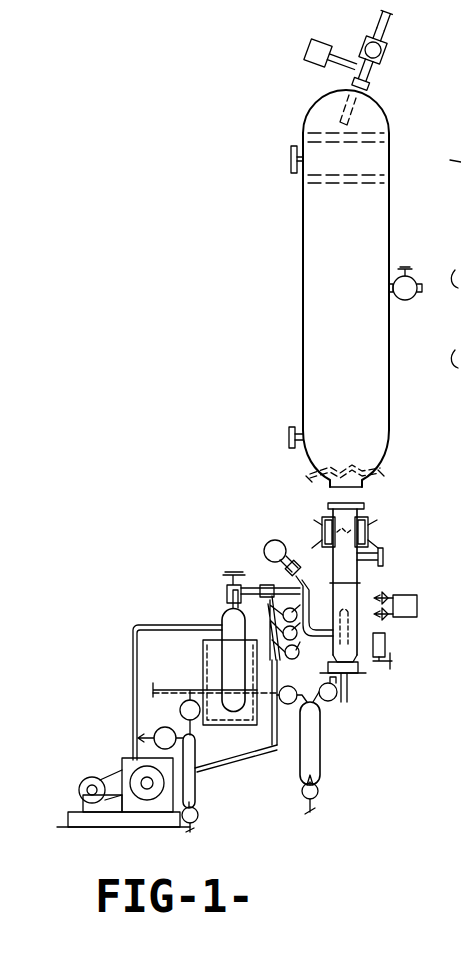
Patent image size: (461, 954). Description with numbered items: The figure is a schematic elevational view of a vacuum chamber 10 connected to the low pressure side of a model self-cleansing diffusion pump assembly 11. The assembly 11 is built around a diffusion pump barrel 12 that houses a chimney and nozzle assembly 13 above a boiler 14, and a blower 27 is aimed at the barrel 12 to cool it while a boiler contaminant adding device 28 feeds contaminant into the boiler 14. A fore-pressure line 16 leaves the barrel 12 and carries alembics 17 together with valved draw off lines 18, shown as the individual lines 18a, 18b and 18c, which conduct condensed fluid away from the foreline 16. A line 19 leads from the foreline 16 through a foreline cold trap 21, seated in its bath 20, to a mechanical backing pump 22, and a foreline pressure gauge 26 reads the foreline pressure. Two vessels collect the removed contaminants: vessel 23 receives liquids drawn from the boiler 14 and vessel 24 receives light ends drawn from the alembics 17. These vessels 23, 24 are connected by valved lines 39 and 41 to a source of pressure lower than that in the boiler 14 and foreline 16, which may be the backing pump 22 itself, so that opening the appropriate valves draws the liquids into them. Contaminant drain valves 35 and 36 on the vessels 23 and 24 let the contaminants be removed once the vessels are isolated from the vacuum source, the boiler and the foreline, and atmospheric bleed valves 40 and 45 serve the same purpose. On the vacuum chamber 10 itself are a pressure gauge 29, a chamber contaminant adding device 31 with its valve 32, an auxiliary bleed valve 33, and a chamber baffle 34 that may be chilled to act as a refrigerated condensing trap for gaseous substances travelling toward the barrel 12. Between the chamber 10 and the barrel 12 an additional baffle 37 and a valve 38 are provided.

The vacuum chamber 10 is at (303, 246).
The diffusion pump assembly 11 is at (211, 565).
The diffusion pump barrel 12 is at (360, 585).
The chimney and nozzle assembly 13 is at (352, 624).
The boiler 14 is at (358, 675).
The fore-pressure line 16 is at (306, 596).
The alembics 17 is at (306, 628).
The valved draw off lines 18 is at (280, 622).
The line 18a is at (447, 282).
The line 18b is at (440, 356).
The line 18c is at (453, 429).
The backing pump line 19 is at (449, 154).
The cooling bath 20 is at (230, 682).
The foreline cold trap 21 is at (232, 632).
The mechanical backing pump 22 is at (122, 758).
The contaminant collection vessel 23 is at (321, 746).
The light end collection vessel 24 is at (197, 785).
The foreline pressure gauge 26 is at (265, 548).
The blower 27 is at (417, 606).
The boiler contaminant adding device 28 is at (386, 646).
The pressure gauge 29 is at (305, 62).
The chamber contaminant adding device 31 is at (380, 30).
The valve 32 is at (390, 66).
The auxiliary bleed valve 33 is at (418, 280).
The chamber baffle 34 is at (348, 470).
The contaminant drain valve 35 is at (318, 793).
The contaminant drain valve 36 is at (198, 817).
The additional baffle 37 is at (320, 524).
The valve 38 is at (376, 550).
The valved line 39 is at (262, 695).
The atmospheric bleed valve 40 is at (334, 700).
The valved line 41 is at (180, 713).
The atmospheric bleed valve 45 is at (155, 736).